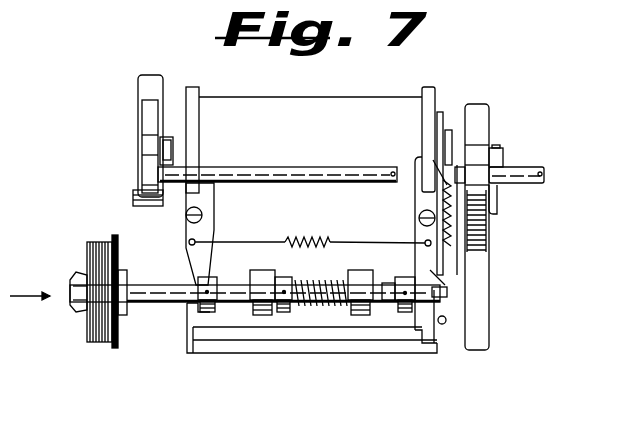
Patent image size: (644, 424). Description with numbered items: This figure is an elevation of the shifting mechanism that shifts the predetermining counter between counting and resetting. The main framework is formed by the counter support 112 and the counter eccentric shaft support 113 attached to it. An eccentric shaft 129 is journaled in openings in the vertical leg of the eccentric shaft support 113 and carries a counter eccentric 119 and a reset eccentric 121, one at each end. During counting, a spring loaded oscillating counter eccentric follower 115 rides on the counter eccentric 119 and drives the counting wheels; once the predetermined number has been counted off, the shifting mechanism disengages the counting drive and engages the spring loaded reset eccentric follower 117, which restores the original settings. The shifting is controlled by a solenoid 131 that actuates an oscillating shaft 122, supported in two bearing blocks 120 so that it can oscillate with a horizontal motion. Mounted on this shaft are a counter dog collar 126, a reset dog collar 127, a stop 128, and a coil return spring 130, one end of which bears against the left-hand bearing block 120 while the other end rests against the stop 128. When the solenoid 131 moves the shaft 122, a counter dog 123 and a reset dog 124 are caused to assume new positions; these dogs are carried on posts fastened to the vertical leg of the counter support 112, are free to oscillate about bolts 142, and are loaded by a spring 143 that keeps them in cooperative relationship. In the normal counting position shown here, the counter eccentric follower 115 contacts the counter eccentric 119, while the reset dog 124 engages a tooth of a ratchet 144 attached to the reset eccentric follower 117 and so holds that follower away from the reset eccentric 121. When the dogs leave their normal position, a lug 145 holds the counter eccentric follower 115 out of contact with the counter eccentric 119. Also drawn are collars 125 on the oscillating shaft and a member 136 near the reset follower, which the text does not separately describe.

The counter support 112 is at (215, 345).
The counter eccentric shaft support 113 is at (196, 92).
The counter eccentric follower 115 is at (142, 85).
The reset eccentric follower 117 is at (480, 318).
The counter eccentric 119 is at (145, 118).
The bearing block 120 is at (260, 306).
The reset eccentric 121 is at (480, 117).
The oscillating shaft 122 is at (388, 302).
The counter dog 123 is at (208, 204).
The reset dog 124 is at (415, 165).
The collars 125 is at (207, 290).
The counter dog collar 126 is at (200, 303).
The reset dog collar 127 is at (436, 298).
The stop 128 is at (287, 303).
The eccentric shaft 129 is at (530, 172).
The coil return spring 130 is at (325, 305).
The solenoid 131 is at (98, 330).
The lug 136 is at (440, 280).
The bolt 142 is at (186, 216).
The spring 143 is at (312, 238).
The ratchet 144 is at (457, 252).
The lug 145 is at (172, 142).